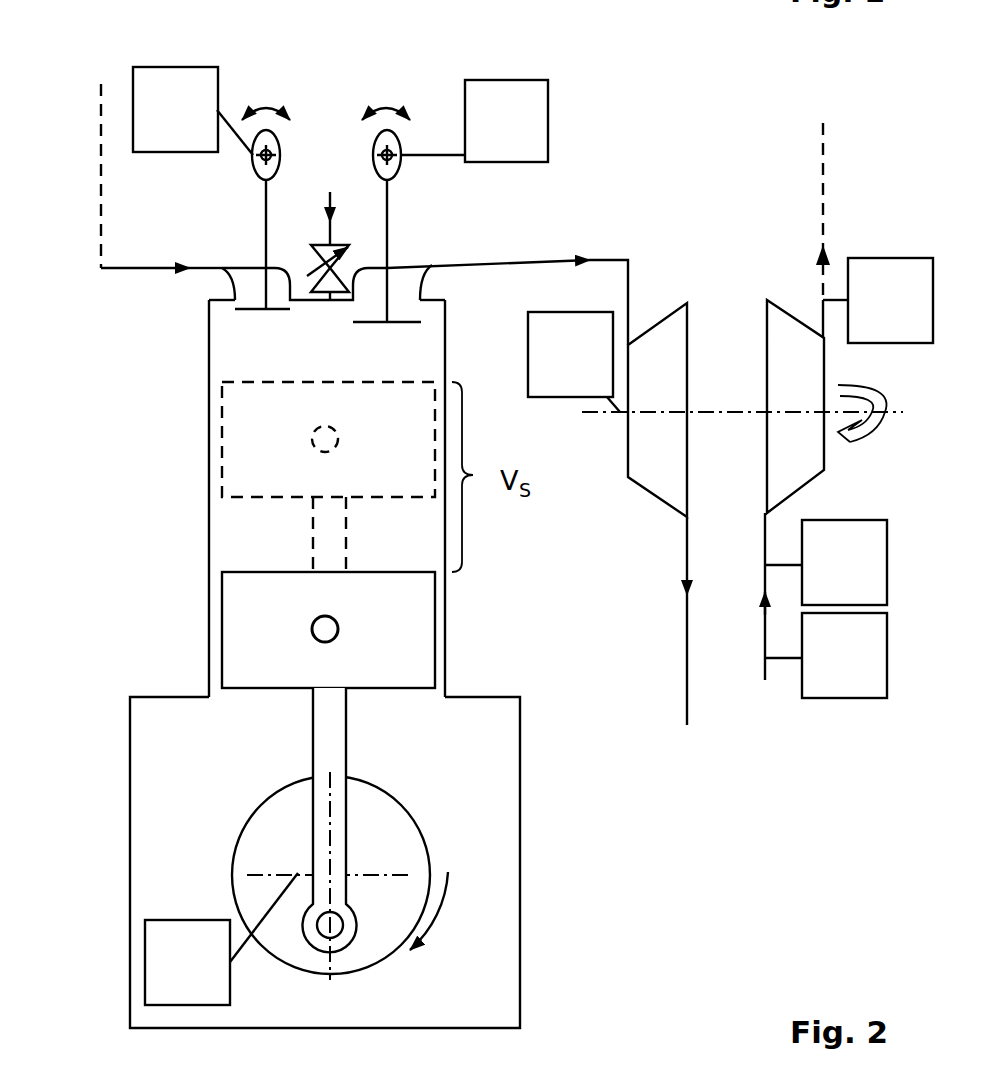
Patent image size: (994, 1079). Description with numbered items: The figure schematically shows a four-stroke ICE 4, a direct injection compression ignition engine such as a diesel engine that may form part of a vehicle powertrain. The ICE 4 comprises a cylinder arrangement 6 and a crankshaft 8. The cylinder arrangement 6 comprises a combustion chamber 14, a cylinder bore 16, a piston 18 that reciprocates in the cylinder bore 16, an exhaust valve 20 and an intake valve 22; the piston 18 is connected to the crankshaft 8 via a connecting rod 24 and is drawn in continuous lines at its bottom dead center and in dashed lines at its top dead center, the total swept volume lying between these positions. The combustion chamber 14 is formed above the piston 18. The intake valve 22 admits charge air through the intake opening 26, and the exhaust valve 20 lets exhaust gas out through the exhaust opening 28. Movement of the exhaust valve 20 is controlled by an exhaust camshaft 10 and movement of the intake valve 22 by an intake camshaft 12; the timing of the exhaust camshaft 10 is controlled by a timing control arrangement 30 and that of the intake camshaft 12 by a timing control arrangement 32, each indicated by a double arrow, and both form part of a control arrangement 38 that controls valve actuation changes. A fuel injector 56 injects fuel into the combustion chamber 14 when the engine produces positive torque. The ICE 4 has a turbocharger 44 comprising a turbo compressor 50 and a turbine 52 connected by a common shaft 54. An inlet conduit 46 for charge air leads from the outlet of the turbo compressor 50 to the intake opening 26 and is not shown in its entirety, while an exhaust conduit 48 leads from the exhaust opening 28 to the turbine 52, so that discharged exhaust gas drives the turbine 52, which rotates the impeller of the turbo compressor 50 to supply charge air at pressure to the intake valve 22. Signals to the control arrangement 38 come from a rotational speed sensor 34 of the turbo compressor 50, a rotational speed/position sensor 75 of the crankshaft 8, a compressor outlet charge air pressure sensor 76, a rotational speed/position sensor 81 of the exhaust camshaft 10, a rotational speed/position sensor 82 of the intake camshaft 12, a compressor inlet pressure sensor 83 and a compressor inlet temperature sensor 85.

The four-stroke ICE 4 is at (658, 118).
The cylinder arrangement 6 is at (520, 449).
The crankshaft 8 is at (350, 834).
The exhaust camshaft 10 is at (402, 148).
The intake camshaft 12 is at (280, 148).
The combustion chamber 14 is at (273, 360).
The cylinder bore 16 is at (445, 633).
The piston 18 is at (403, 460).
The exhaust valve 20 is at (390, 220).
The intake valve 22 is at (265, 228).
The connecting rod 24 is at (340, 732).
The intake opening 26 is at (290, 298).
The exhaust opening 28 is at (372, 300).
The timing control arrangement 30 is at (387, 102).
The timing control arrangement 32 is at (268, 102).
The rotational speed sensor 34 is at (555, 369).
The control arrangement 38 is at (65, 65).
The turbocharger 44 is at (710, 287).
The inlet conduit 46 is at (823, 200).
The exhaust conduit 48 is at (550, 259).
The turbo compressor 50 is at (803, 452).
The turbine 52 is at (675, 487).
The common shaft 54 is at (753, 413).
The fuel injector 56 is at (316, 244).
The rotational speed/position sensor 75 is at (172, 980).
The compressor outlet/charge air pressure sensor 76 is at (875, 315).
The rotational speed/position sensor 81 is at (491, 137).
The rotational speed/position sensor 82 is at (160, 125).
The compressor inlet pressure sensor 83 is at (830, 577).
The compressor inlet temperature sensor 85 is at (830, 670).